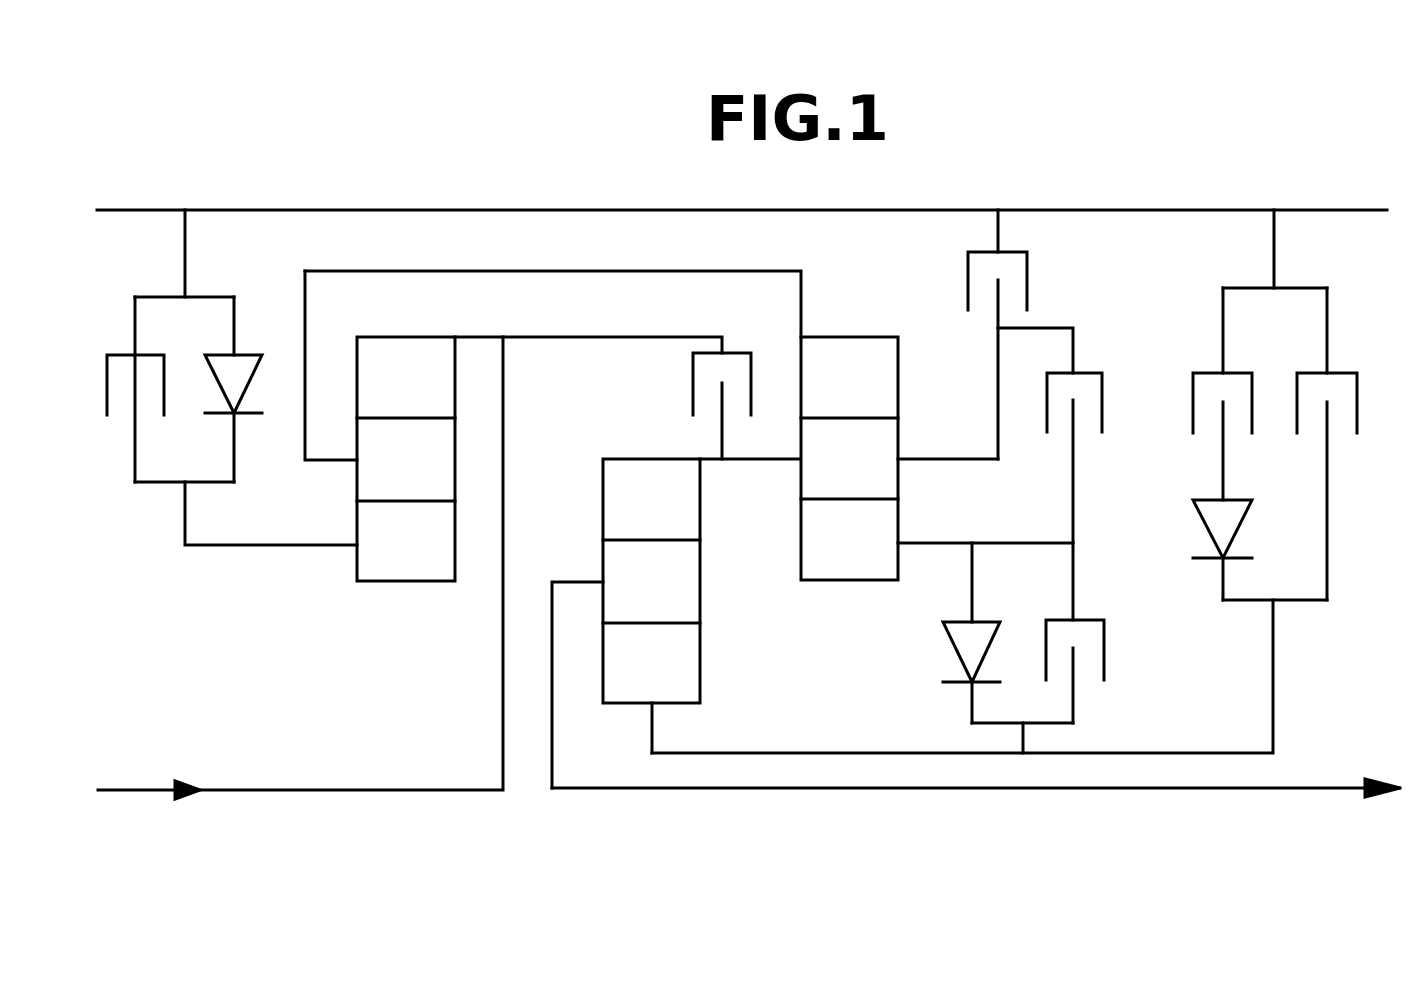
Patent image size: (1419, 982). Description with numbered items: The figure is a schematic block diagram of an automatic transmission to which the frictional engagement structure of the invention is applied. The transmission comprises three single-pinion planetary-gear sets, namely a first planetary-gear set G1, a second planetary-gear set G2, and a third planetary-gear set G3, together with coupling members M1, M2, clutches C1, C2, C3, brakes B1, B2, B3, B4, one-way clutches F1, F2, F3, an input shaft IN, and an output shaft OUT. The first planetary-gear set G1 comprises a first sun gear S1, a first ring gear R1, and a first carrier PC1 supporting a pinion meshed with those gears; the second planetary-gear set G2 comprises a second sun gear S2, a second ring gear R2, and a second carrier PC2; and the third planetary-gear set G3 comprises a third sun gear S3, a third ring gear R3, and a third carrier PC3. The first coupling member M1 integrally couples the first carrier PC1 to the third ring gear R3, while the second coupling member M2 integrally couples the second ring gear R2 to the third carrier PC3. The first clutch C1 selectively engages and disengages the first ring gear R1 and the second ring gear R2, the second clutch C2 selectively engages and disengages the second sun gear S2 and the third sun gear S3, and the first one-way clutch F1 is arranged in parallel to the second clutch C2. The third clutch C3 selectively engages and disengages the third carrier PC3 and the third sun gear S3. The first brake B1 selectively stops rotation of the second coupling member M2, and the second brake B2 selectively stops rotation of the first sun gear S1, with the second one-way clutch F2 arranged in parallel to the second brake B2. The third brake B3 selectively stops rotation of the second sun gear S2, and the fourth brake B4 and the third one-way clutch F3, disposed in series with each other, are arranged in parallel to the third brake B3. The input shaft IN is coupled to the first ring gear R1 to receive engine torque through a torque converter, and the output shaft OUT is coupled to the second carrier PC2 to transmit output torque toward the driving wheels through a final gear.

The first brake B1 is at (1007, 334).
The second brake B2 is at (170, 346).
The third brake B3 is at (1338, 444).
The fourth brake B4 is at (1234, 394).
The first clutch C1 is at (733, 387).
The second clutch C2 is at (1049, 667).
The third clutch C3 is at (1063, 474).
The first one-way clutch F1 is at (981, 633).
The second one-way clutch F2 is at (246, 421).
The third one-way clutch F3 is at (1243, 550).
The first planetary-gear set G1 is at (380, 426).
The second planetary-gear set G2 is at (626, 582).
The third planetary-gear set G3 is at (937, 417).
The first coupling member M1 is at (494, 270).
The second coupling member M2 is at (764, 459).
The first ring gear R1 is at (405, 379).
The first carrier PC1 is at (406, 461).
The first sun gear S1 is at (406, 542).
The second ring gear R2 is at (651, 501).
The second carrier PC2 is at (652, 583).
The second sun gear S2 is at (652, 664).
The third ring gear R3 is at (849, 379).
The third carrier PC3 is at (850, 460).
The third sun gear S3 is at (850, 541).
The input shaft IN is at (118, 790).
The output shaft OUT is at (1322, 788).